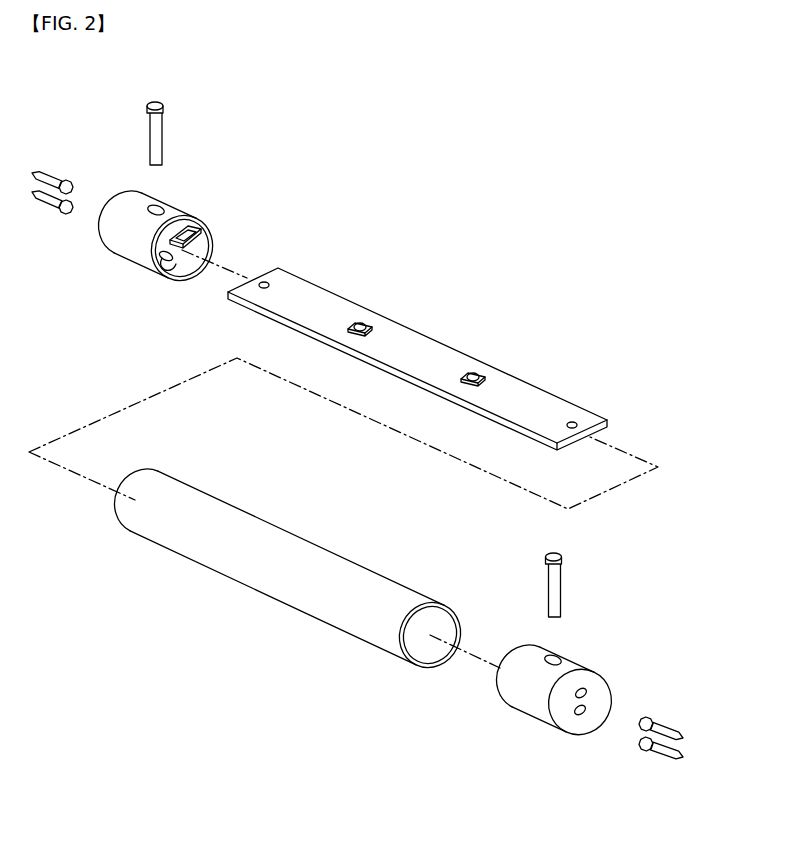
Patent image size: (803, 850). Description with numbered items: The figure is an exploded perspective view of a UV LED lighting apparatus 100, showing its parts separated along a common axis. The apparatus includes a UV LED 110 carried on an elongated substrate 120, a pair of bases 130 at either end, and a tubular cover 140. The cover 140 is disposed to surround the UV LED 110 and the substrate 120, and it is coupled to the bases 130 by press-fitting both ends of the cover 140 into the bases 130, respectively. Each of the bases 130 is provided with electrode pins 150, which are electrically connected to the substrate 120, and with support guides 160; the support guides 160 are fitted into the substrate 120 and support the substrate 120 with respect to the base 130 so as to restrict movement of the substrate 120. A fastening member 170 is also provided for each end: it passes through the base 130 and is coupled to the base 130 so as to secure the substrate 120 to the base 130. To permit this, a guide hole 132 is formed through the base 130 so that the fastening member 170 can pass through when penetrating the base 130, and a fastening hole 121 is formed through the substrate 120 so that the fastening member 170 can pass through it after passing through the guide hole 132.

The UV LED lighting apparatus 100 is at (278, 710).
The UV LED 110 is at (480, 370).
The substrate 120 is at (405, 311).
The fastening hole 121 is at (270, 283).
The base 130 is at (96, 266).
The guide hole 132 is at (162, 205).
The cover 140 is at (237, 562).
The electrode pins 150 is at (44, 170).
The support guides 160 is at (208, 238).
The fastening member 170 is at (158, 103).